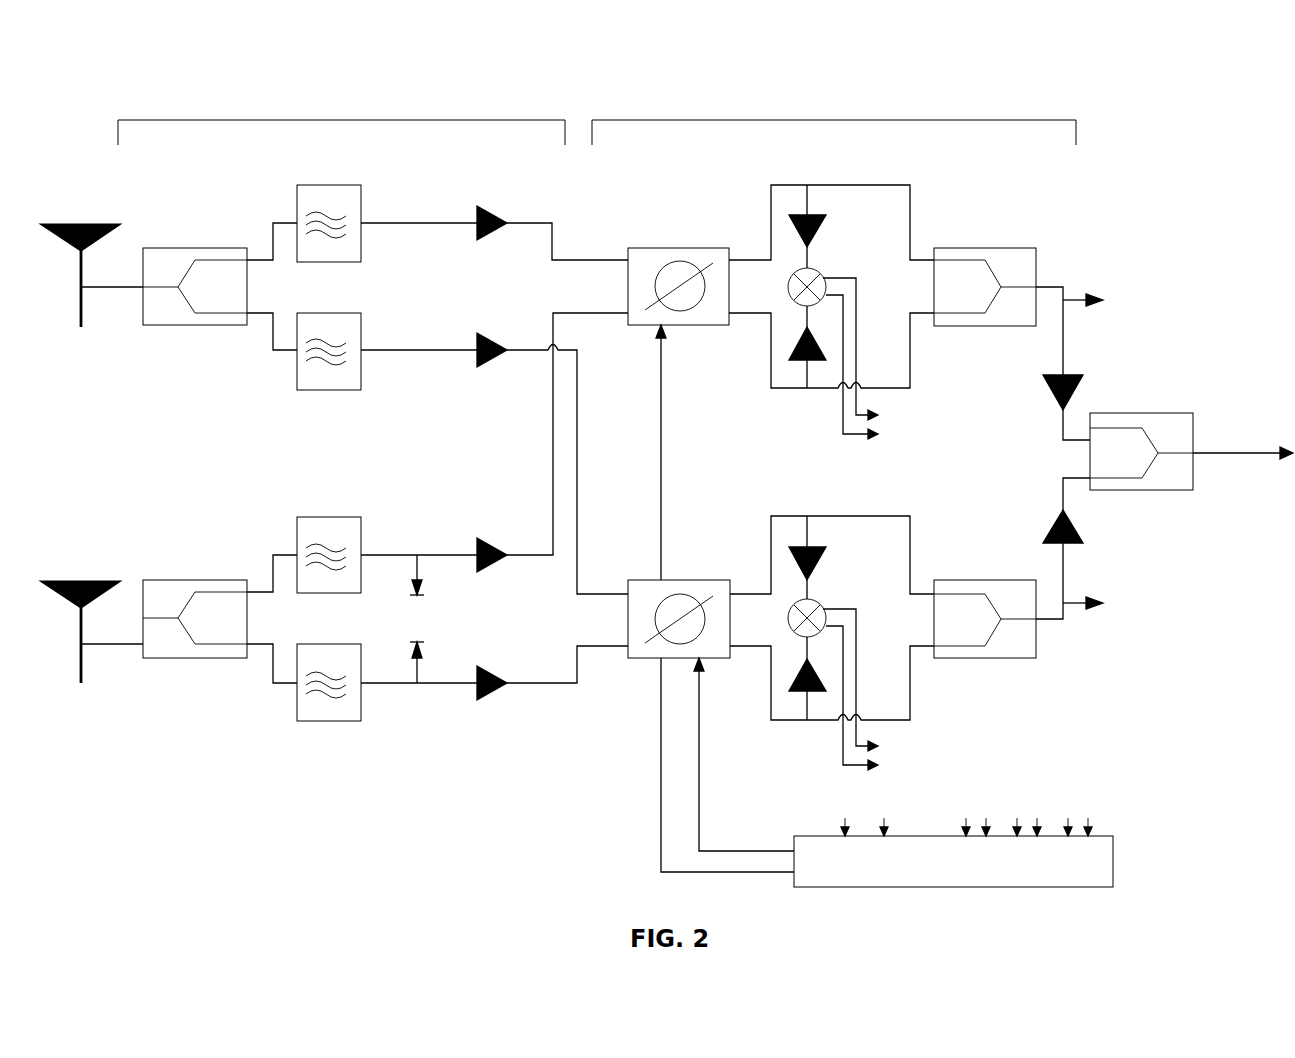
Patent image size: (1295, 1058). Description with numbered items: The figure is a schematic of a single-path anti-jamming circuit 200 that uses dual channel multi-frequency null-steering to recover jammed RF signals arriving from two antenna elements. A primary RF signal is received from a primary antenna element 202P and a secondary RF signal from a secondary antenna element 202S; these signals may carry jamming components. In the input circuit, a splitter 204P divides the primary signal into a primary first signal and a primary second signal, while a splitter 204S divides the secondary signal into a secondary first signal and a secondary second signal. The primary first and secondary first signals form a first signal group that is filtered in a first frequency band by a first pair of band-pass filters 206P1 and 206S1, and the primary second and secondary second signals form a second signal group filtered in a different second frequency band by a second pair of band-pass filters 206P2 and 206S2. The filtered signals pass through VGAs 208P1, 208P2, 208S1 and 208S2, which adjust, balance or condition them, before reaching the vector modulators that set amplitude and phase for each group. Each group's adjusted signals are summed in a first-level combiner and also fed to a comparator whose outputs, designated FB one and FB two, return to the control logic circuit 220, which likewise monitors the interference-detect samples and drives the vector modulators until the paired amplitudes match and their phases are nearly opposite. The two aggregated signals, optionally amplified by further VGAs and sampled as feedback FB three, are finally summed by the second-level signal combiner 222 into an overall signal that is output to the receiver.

The anti-jamming circuit 200 is at (121, 79).
The primary antenna element 202P is at (107, 218).
The secondary antenna element 202S is at (107, 578).
The splitter 204P is at (182, 253).
The splitter 204S is at (182, 588).
The band-pass filter 206P1 is at (323, 198).
The band-pass filter 206P2 is at (323, 378).
The band-pass filter 206S1 is at (322, 530).
The band-pass filter 206S2 is at (322, 708).
The VGA 208P1 is at (482, 250).
The VGA 208P2 is at (482, 377).
The VGA 208S1 is at (483, 580).
The VGA 208S2 is at (483, 705).
The control logic circuit 220 is at (1108, 836).
The second-level signal combiner 222 is at (1187, 427).